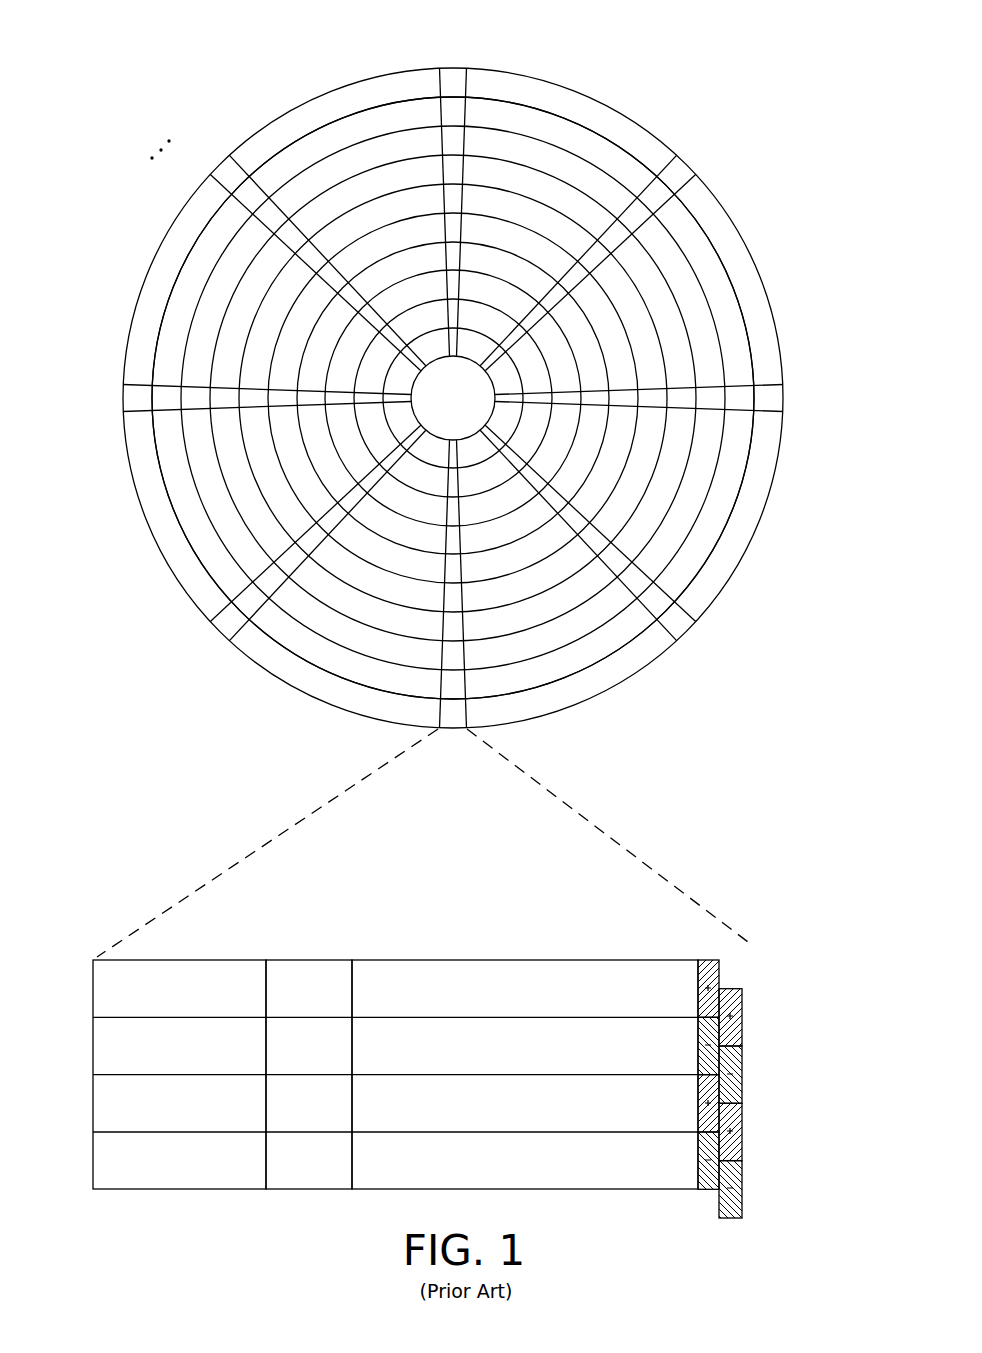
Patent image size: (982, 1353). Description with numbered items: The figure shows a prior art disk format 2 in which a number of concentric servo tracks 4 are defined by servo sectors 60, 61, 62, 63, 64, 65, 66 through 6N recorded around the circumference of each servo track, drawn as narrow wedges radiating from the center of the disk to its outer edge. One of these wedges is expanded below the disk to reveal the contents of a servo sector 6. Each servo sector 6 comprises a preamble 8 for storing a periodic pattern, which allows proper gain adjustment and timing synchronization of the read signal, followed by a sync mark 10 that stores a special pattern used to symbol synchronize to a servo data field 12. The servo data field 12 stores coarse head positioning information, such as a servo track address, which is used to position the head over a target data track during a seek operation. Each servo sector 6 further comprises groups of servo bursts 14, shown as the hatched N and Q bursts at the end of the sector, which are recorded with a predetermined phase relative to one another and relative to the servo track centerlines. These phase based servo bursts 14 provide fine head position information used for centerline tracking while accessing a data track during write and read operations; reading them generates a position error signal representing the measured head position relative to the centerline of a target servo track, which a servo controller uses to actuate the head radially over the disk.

The disk format 2 is at (200, 66).
The servo track 4 is at (565, 133).
The servo sector 6 is at (452, 409).
The servo sector 60 is at (452, 78).
The servo sector 61 is at (678, 172).
The servo sector 62 is at (774, 400).
The servo sector 63 is at (682, 630).
The servo sector 64 is at (302, 802).
The servo sector 65 is at (222, 630).
The servo sector 66 is at (124, 398).
The servo sector 6N is at (228, 172).
The preamble 8 is at (187, 960).
The sync mark 10 is at (311, 960).
The servo data field 12 is at (512, 960).
The servo bursts 14 is at (742, 952).